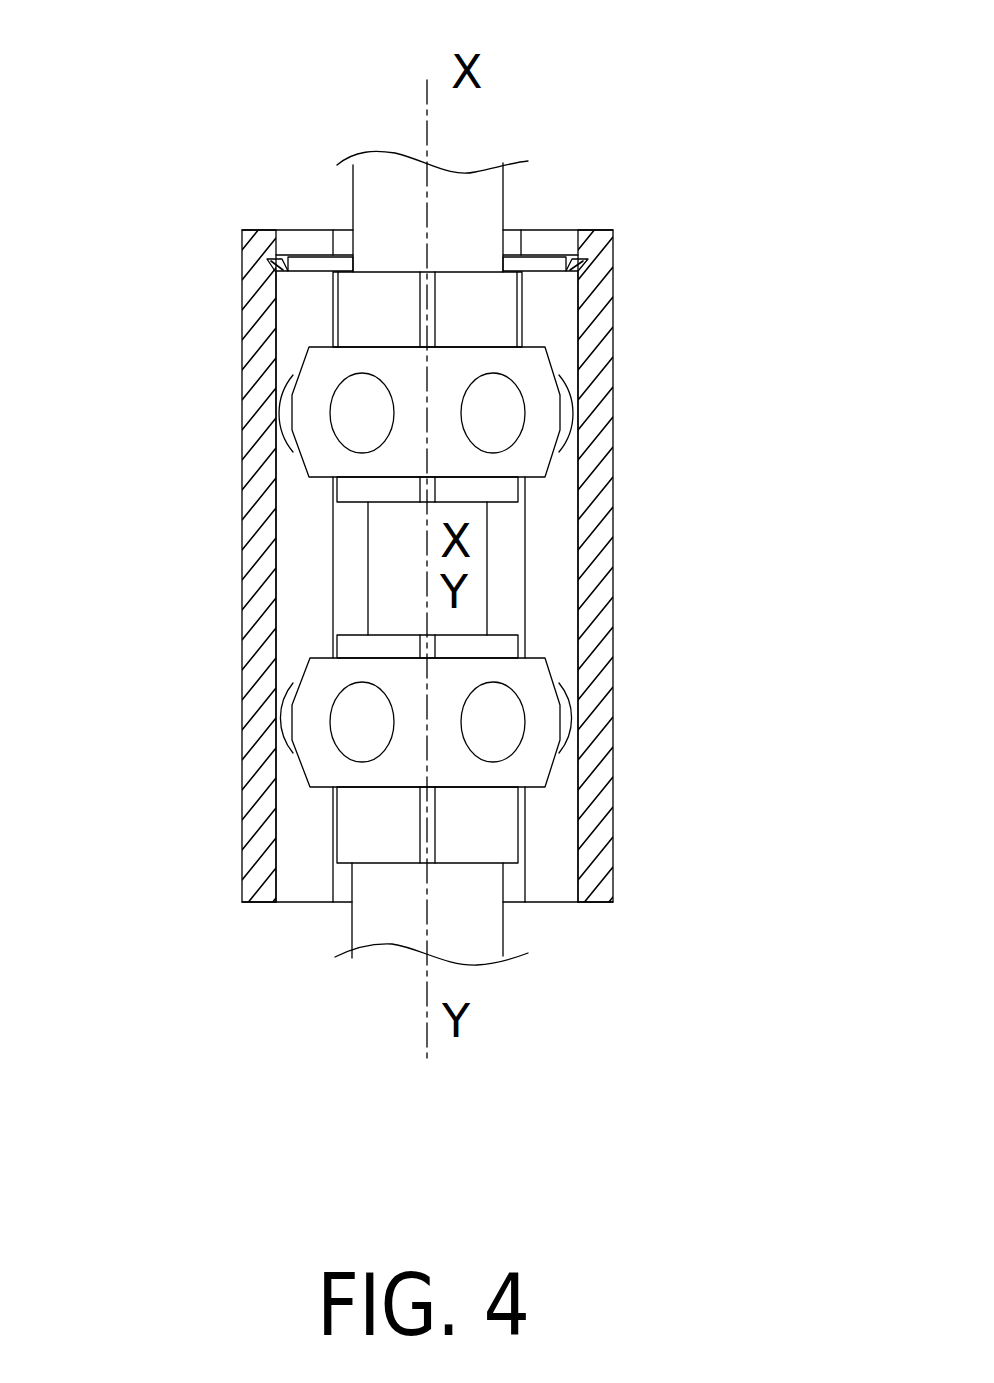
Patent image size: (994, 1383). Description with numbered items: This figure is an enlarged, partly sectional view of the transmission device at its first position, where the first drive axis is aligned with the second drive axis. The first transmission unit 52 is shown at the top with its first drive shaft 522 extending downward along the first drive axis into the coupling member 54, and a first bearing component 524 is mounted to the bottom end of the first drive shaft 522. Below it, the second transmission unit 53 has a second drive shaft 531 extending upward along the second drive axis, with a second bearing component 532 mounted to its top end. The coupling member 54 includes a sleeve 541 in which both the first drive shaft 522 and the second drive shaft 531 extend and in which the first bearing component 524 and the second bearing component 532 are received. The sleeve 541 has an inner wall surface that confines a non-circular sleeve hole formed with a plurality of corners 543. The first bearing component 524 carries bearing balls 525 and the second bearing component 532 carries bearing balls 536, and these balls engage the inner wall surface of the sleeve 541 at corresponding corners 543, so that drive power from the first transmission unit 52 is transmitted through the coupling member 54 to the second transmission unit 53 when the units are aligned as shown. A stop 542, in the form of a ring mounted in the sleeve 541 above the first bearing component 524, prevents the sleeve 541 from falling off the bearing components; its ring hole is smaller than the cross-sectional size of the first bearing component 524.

The first transmission unit 52 is at (340, 186).
The first drive shaft 522 is at (412, 205).
The first bearing component 524 is at (317, 365).
The bearing balls 525 is at (283, 415).
The second transmission unit 53 is at (330, 919).
The second drive shaft 531 is at (412, 907).
The second bearing component 532 is at (313, 698).
The bearing balls 536 is at (278, 738).
The coupling member 54 is at (630, 366).
The sleeve 541 is at (592, 503).
The stop 542 is at (568, 262).
The corners 543 is at (276, 547).